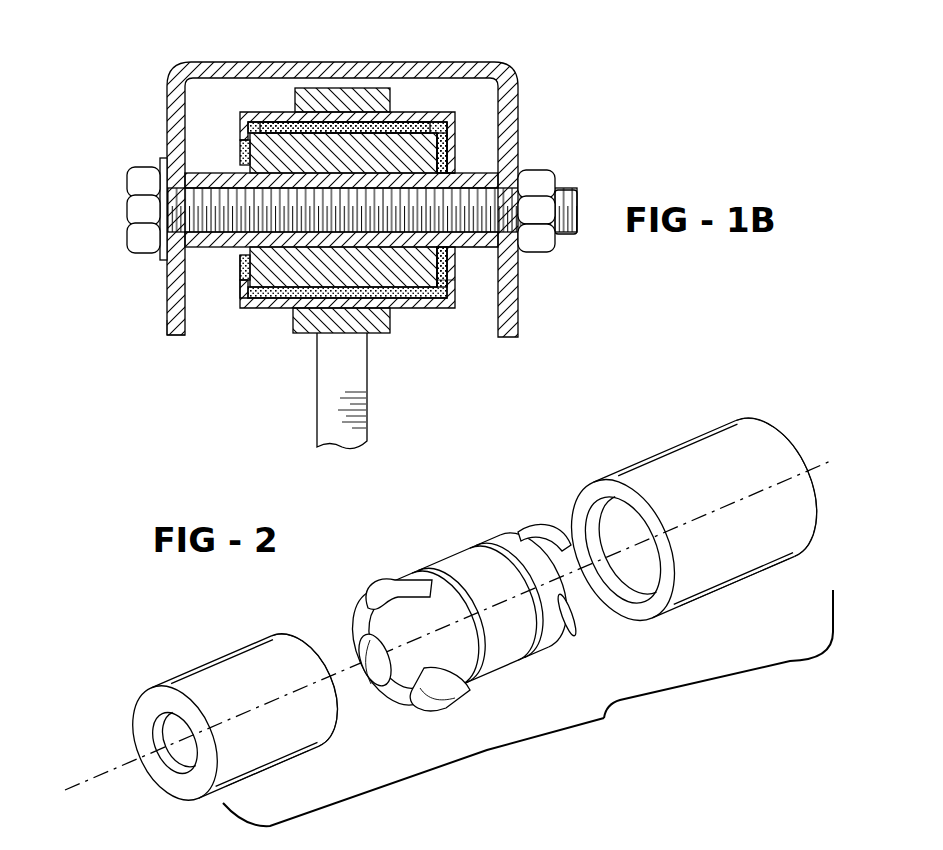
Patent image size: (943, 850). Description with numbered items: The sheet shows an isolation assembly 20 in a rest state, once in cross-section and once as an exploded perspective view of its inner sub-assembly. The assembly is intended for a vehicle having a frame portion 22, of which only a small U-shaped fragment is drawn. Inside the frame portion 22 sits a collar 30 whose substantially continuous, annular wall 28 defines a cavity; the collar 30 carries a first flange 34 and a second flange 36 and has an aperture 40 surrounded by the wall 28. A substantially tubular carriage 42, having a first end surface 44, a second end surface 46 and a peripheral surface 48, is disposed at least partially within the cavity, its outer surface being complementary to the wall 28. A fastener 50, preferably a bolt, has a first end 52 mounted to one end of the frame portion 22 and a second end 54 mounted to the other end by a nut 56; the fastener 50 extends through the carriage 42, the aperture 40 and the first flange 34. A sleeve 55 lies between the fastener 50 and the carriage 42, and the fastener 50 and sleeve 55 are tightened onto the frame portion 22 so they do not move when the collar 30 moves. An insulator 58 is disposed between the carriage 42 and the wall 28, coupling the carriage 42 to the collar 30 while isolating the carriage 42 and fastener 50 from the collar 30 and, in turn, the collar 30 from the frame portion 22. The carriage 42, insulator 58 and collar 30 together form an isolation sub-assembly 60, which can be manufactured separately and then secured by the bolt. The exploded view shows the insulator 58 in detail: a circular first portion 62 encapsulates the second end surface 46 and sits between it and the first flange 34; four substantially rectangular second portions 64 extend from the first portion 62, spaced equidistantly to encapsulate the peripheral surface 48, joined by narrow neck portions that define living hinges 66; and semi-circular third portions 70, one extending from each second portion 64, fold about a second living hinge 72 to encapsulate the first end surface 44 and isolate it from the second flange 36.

In FIG. 1B, the isolation assembly 20 is at (186, 360).
In FIG. 1B, the frame portion 22 is at (512, 113).
In FIG. 1B, the continuous wall 28 is at (410, 117).
In FIG. 2, the continuous wall 28 is at (667, 450).
In FIG. 1B, the collar 30 is at (283, 312).
In FIG. 2, the collar 30 is at (730, 595).
In FIG. 1B, the first flange 34 is at (455, 152).
In FIG. 2, the first flange 34 is at (777, 425).
In FIG. 1B, the second flange 36 is at (238, 287).
In FIG. 2, the second flange 36 is at (637, 610).
In FIG. 1B, the aperture 40 is at (452, 252).
In FIG. 1B, the carriage 42 is at (282, 150).
In FIG. 2, the carriage 42 is at (181, 668).
In FIG. 1B, the first end surface 44 is at (243, 255).
In FIG. 2, the first end surface 44 is at (145, 712).
In FIG. 1B, the second end surface 46 is at (460, 172).
In FIG. 2, the second end surface 46 is at (299, 637).
In FIG. 2, the peripheral surface 48 is at (265, 747).
In FIG. 1B, the fastener 50 is at (203, 173).
In FIG. 1B, the first end 52 is at (138, 208).
In FIG. 1B, the second end 54 is at (568, 209).
In FIG. 1B, the sleeve 55 is at (233, 203).
In FIG. 1B, the nut 56 is at (535, 243).
In FIG. 1B, the insulator 58 is at (410, 305).
In FIG. 2, the insulator 58 is at (439, 545).
In FIG. 1B, the isolation sub-assembly 60 is at (442, 342).
In FIG. 2, the isolation sub-assembly 60 is at (604, 718).
In FIG. 1B, the first portion 62 is at (445, 150).
In FIG. 2, the first portion 62 is at (540, 545).
In FIG. 1B, the second portions 64 is at (330, 125).
In FIG. 2, the second portions 64 is at (503, 667).
In FIG. 2, the living hinges 66 is at (583, 590).
In FIG. 1B, the third portions 70 is at (237, 145).
In FIG. 2, the third portions 70 is at (405, 688).
In FIG. 2, the second living hinge 72 is at (362, 647).